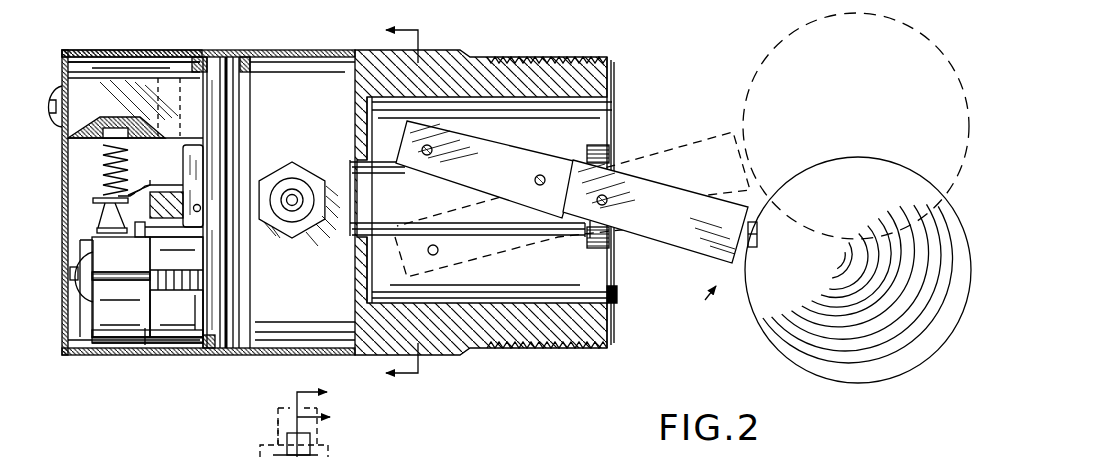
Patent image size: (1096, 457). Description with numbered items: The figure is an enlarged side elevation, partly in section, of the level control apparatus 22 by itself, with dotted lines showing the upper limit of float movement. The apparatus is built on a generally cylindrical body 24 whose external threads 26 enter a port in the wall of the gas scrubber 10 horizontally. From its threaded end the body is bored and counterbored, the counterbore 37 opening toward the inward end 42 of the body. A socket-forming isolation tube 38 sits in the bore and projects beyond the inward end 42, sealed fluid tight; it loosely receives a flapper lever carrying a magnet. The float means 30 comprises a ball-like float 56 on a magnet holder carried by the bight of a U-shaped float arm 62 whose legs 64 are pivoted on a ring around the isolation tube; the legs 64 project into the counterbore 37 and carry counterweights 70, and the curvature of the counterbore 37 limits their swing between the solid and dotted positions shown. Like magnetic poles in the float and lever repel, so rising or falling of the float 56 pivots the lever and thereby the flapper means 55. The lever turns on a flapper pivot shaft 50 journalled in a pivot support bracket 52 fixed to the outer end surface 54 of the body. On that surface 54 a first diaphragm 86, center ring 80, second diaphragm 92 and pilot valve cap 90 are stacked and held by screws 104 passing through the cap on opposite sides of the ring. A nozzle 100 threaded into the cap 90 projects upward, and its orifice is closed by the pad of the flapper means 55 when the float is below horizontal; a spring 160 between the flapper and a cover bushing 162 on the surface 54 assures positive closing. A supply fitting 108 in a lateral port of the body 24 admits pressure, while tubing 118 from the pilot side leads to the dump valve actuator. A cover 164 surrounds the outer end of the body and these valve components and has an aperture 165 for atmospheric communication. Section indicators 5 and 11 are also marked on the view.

The level control apparatus 22 is at (307, 42).
The cover 164 is at (120, 50).
The cover bushing 162 is at (138, 72).
The outer end surface of the body 54 is at (187, 52).
The spring 160 is at (122, 170).
The flapper means 55 is at (96, 187).
The nozzle 100 is at (102, 213).
The pivot support bracket 52 is at (198, 146).
The flapper pivot shaft 50 is at (200, 210).
The second diaphragm 92 is at (137, 338).
The screws 104 is at (200, 272).
The first diaphragm 86 is at (203, 305).
The pilot valve cap 90 is at (80, 357).
The aperture 165 is at (178, 357).
The center ring 80 is at (216, 353).
The supply fitting 108 is at (290, 171).
The body 24 is at (378, 343).
The external threads 26 is at (512, 62).
The inward end of the body 42 is at (614, 72).
The body counterbore 37 is at (612, 293).
The isolation tube 38 is at (470, 207).
The U-shaped float arm 62 is at (702, 136).
The counterweights 70 is at (487, 169).
The float arm legs 64 is at (660, 211).
The float means 30 is at (699, 309).
The float 56 is at (770, 50).
The section line 5 is at (416, 205).
The gas scrubber 10 is at (316, 424).
The connector 11 is at (292, 409).
The tubing 118 is at (278, 423).